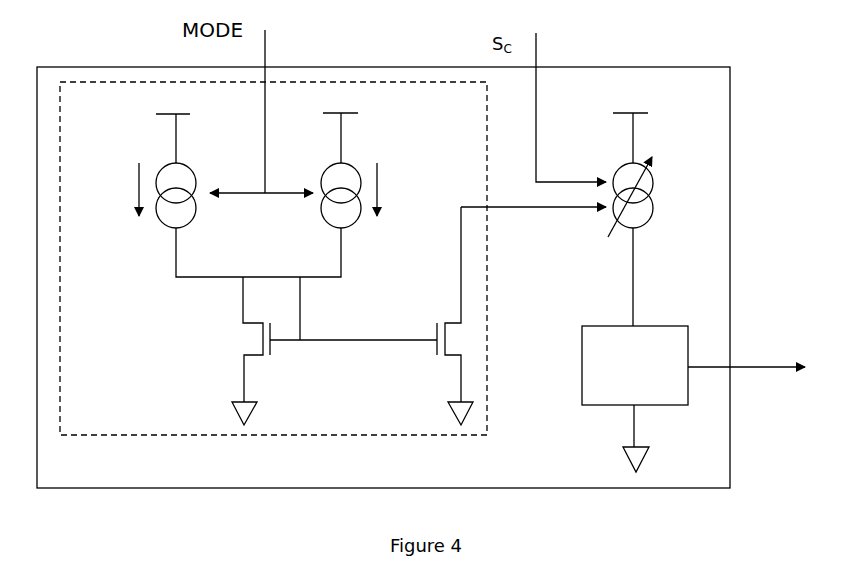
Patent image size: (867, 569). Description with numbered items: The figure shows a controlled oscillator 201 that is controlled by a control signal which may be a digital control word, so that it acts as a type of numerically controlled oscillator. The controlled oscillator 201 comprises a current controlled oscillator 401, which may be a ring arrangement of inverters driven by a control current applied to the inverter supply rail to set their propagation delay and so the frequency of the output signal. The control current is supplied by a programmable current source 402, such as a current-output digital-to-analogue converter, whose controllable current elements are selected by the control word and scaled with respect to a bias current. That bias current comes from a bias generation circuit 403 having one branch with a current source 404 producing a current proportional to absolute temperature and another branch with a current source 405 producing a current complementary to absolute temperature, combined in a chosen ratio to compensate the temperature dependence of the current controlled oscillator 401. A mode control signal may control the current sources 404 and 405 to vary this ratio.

The controlled oscillator 201 is at (116, 473).
The current controlled oscillator 401 is at (617, 384).
The programmable current source 402 is at (650, 201).
The bias generation circuit 403 is at (355, 436).
The current source 404 is at (160, 166).
The current source 405 is at (350, 166).